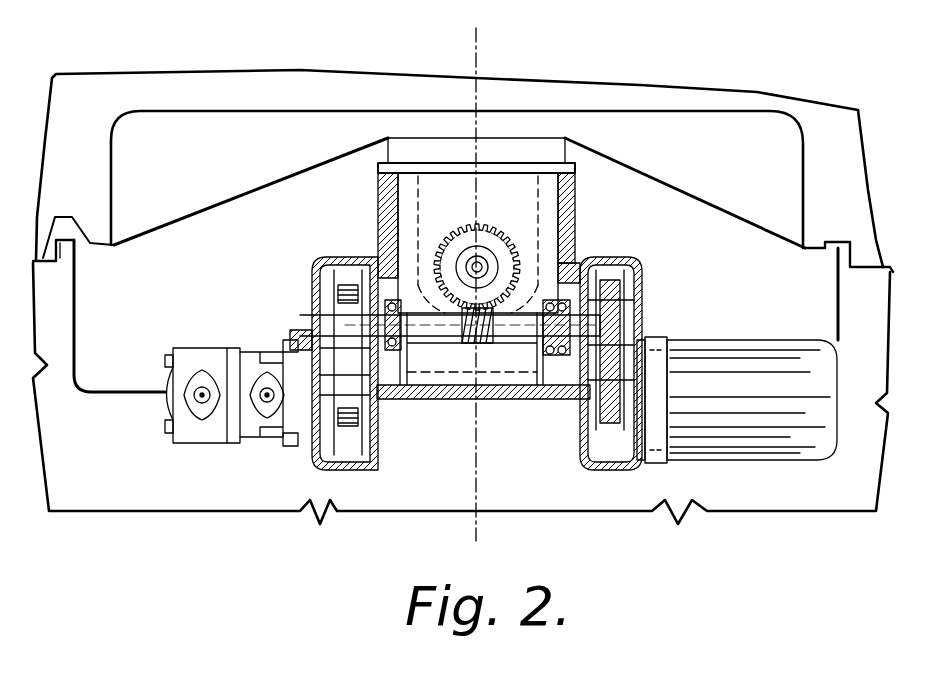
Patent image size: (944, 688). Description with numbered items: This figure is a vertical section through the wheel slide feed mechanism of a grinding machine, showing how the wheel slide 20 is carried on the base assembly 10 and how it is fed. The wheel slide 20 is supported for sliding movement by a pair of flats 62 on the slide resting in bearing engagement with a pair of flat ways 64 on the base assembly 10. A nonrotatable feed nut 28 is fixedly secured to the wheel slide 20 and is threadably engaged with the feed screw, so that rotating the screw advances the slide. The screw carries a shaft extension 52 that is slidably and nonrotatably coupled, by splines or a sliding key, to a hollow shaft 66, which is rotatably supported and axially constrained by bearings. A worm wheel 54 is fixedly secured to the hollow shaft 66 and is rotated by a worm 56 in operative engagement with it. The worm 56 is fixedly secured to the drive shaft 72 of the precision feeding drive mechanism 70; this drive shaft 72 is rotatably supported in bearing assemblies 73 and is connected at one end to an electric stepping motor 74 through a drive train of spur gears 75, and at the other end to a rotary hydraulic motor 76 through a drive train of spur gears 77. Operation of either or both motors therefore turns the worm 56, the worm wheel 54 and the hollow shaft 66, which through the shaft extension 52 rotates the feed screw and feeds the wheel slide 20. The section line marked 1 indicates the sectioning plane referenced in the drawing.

The section line 1- 1 is at (516, 541).
The base assembly 10 is at (110, 392).
The wheel slide 20 is at (767, 230).
The feed nut 28 is at (527, 240).
The shaft extension 52 is at (463, 267).
The worm wheel 54 is at (446, 231).
The worm 56 is at (476, 344).
The flats 62 is at (855, 272).
The flat ways 64 is at (87, 244).
The hollow shaft 66 is at (484, 252).
The precision feeding drive mechanism 70 is at (450, 400).
The drive shaft 72 is at (420, 330).
The bearing assemblies 73 is at (402, 400).
The electric stepping motor 74 is at (703, 347).
The spur gears 75 is at (620, 335).
The rotary hydraulic motor 76 is at (197, 358).
The spur gears 77 is at (338, 348).